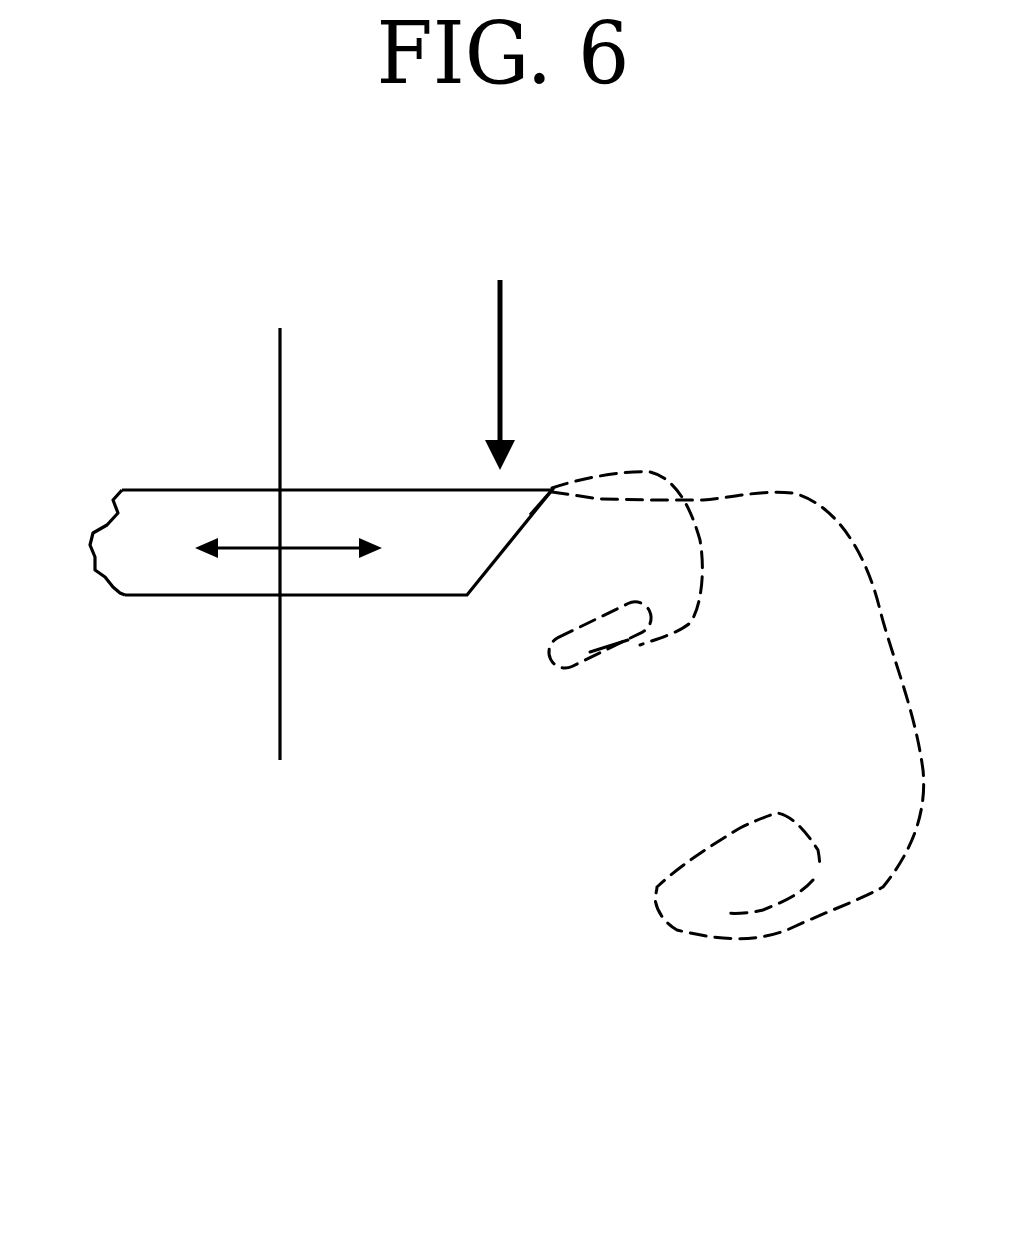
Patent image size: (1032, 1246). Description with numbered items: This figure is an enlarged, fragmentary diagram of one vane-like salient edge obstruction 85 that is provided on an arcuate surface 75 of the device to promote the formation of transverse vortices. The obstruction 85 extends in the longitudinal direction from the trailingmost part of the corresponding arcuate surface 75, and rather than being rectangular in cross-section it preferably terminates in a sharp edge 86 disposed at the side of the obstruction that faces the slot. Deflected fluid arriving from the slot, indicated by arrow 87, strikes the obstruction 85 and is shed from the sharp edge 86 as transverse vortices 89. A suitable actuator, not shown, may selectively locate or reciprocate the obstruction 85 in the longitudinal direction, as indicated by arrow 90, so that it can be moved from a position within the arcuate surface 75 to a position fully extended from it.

The arcuate surface 75 is at (280, 722).
The salient edge obstruction 85 is at (126, 597).
The sharp edge 86 is at (552, 490).
The arrow 87 is at (495, 350).
The transverse vortices 89 is at (657, 640).
The arrow 90 is at (327, 552).